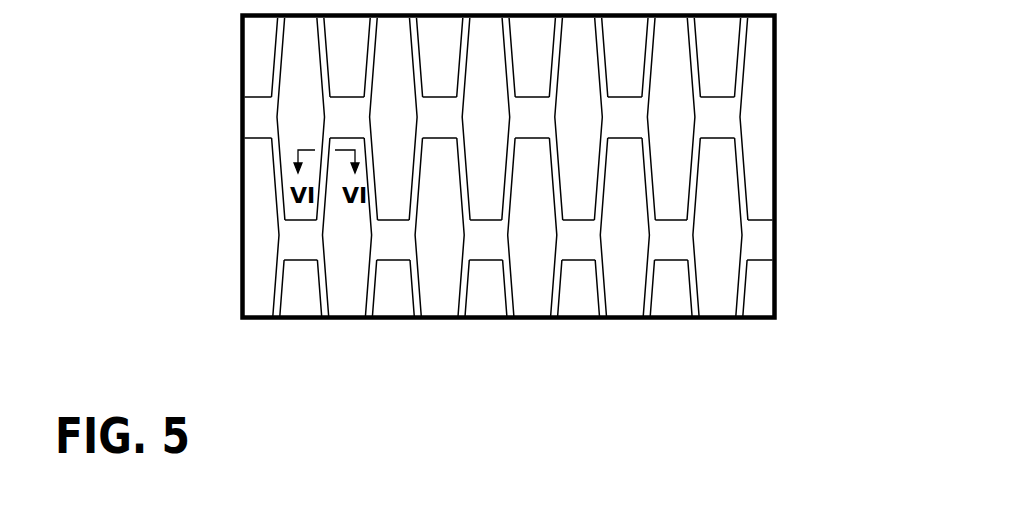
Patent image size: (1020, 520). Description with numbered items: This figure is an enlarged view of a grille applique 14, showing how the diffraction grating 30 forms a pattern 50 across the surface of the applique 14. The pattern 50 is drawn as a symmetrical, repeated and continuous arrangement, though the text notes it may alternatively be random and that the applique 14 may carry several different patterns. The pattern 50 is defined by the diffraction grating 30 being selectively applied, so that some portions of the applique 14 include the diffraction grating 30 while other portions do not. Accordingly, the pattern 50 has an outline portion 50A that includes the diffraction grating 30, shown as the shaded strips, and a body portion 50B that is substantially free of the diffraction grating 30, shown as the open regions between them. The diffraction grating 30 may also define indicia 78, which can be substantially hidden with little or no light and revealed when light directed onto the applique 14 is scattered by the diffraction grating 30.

The applique 14 is at (776, 287).
The diffraction grating 30 is at (715, 117).
The pattern 50 is at (752, 203).
The outline portion 50A is at (260, 117).
The body portion 50B is at (258, 187).
The indicia 78 is at (752, 70).